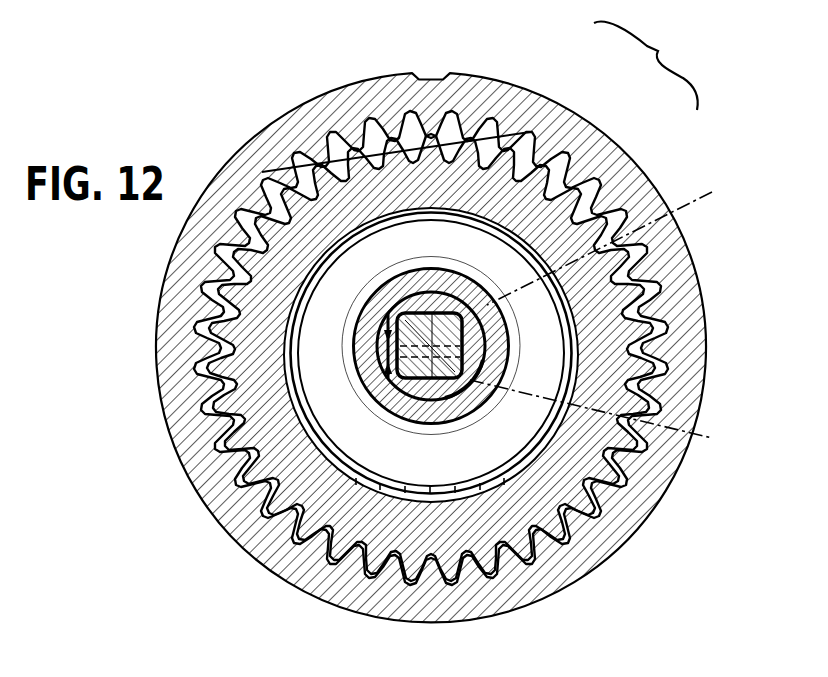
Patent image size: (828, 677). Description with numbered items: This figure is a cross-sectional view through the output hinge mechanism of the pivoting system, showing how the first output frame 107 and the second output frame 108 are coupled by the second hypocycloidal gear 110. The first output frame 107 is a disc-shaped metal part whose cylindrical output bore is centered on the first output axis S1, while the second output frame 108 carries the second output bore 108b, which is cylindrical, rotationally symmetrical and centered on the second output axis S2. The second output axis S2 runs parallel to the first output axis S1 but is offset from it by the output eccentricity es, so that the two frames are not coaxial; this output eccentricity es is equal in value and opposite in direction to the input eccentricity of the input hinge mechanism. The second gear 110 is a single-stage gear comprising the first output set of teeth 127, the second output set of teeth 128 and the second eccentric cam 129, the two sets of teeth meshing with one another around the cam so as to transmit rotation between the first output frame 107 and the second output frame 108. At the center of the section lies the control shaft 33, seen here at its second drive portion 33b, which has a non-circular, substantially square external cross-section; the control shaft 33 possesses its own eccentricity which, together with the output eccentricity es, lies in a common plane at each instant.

The first output frame 107 is at (185, 420).
The second output frame 108 is at (263, 440).
The second output bore 108b is at (300, 222).
The first output set of teeth 127 is at (488, 86).
The second output set of teeth 128 is at (460, 242).
The second eccentric cam 129 is at (435, 300).
The control shaft 33 is at (385, 407).
The second drive portion 33b is at (437, 380).
The output eccentricity es is at (398, 347).
The first output axis S1 is at (616, 239).
The second output axis S2 is at (620, 417).
The second hypocycloidal gear 110 is at (322, 637).